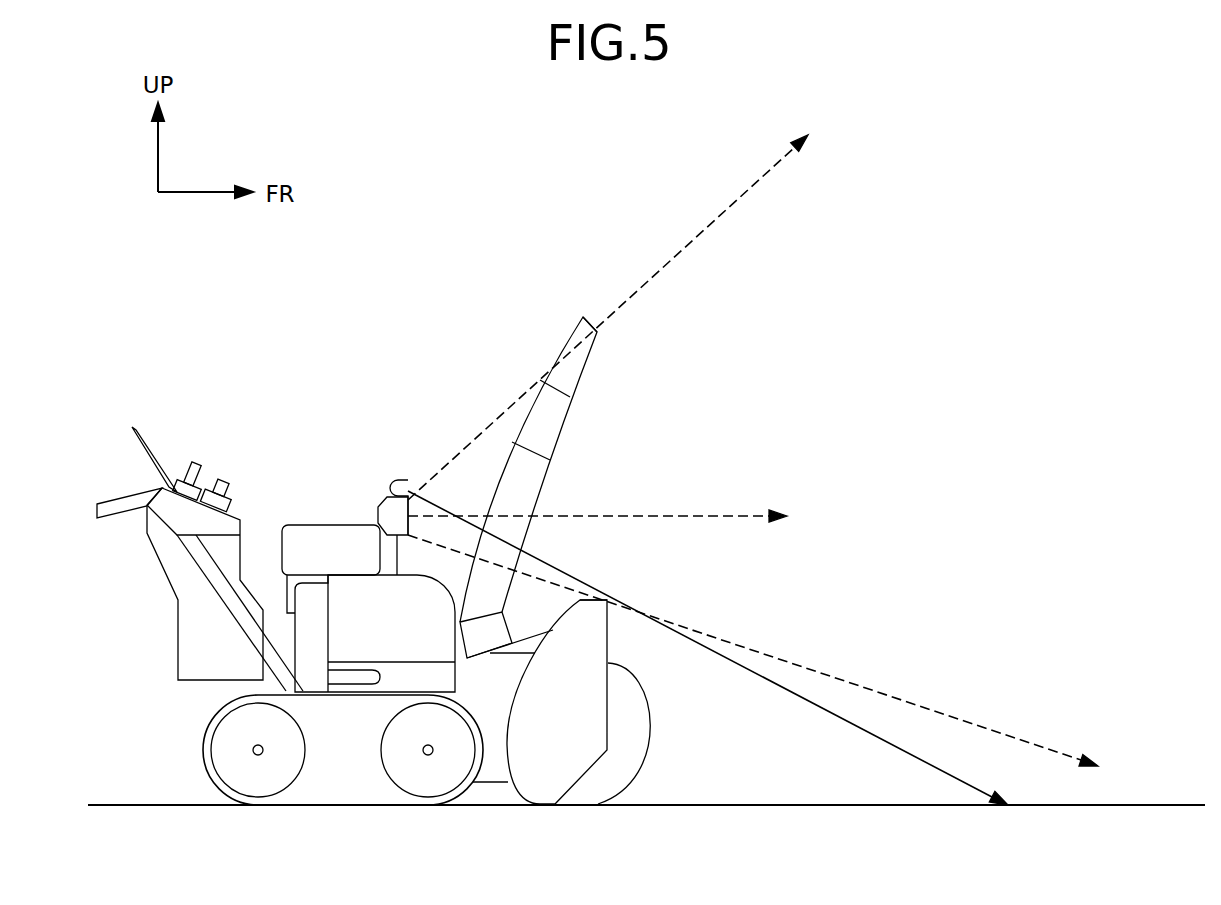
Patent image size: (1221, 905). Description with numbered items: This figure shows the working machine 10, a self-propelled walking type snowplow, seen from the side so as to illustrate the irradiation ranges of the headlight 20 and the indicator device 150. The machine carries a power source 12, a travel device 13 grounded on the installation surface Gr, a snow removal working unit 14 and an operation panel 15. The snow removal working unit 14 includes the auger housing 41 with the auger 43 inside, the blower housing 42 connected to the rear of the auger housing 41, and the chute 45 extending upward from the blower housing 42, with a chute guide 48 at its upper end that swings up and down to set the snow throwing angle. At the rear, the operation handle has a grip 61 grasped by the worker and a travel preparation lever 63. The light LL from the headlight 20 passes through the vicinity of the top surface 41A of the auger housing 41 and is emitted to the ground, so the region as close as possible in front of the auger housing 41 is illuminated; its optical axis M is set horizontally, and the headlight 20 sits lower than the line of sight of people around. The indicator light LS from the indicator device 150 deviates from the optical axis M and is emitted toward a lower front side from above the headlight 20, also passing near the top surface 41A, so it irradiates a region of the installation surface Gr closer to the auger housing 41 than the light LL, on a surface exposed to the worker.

The working machine 10 is at (347, 390).
The power source 12 is at (278, 586).
The travel device 13 is at (190, 742).
The snow removal working unit 14 is at (586, 560).
The operation panel 15 is at (195, 541).
The headlight 20 is at (368, 475).
The indicator device 150 is at (405, 482).
The auger housing 41 is at (610, 664).
The top surface 41A is at (592, 598).
The blower housing 42 is at (507, 680).
The auger 43 is at (637, 757).
The chute 45 is at (552, 469).
The chute guide 48 is at (572, 377).
The grip 61 is at (118, 498).
The travel preparation lever 63 is at (158, 470).
The light LL is at (768, 172).
The optical axis M is at (715, 515).
The indicator light LS is at (818, 700).
The installation surface Gr is at (1148, 803).